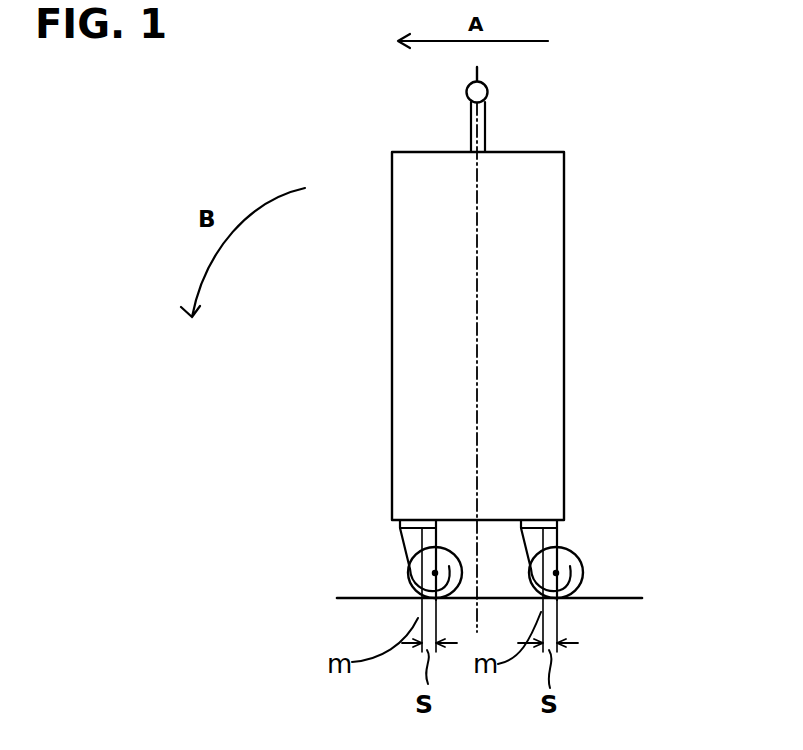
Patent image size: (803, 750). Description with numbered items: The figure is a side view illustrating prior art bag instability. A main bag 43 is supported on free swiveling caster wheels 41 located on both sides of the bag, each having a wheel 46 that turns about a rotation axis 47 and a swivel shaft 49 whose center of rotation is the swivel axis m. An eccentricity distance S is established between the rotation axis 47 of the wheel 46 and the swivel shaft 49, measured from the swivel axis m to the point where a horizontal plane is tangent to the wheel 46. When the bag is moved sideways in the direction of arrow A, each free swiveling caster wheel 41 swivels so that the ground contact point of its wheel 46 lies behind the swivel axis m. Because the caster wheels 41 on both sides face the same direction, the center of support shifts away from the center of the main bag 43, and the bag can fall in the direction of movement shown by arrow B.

The free swiveling caster wheel 41 is at (472, 519).
The main bag 43 is at (609, 322).
The wheel 46 is at (400, 573).
The rotation axis 47 is at (448, 574).
The swivel shaft 49 is at (400, 532).